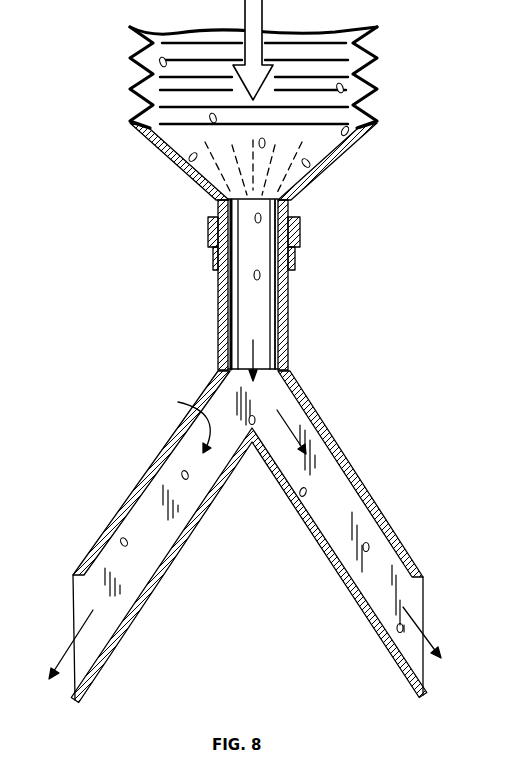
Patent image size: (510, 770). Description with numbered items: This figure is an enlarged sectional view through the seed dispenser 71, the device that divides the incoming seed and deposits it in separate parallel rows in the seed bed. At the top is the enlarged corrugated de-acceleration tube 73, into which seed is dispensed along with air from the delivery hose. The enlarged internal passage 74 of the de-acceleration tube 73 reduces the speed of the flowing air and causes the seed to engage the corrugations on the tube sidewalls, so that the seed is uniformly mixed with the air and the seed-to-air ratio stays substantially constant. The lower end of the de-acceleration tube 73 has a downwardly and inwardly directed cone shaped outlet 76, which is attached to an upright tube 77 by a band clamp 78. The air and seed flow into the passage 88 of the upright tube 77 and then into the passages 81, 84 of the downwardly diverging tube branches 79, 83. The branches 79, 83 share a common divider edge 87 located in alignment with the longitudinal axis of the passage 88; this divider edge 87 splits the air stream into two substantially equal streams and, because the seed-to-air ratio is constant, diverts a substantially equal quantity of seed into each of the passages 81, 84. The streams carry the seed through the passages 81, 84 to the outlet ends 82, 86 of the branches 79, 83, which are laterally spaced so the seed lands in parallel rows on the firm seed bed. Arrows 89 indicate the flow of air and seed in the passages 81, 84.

The seed dispenser 71 is at (155, 197).
The corrugated de-acceleration tube 73 is at (380, 66).
The internal passage 74 is at (298, 57).
The cone shaped outlet 76 is at (323, 170).
The upright tube 77 is at (288, 305).
The band clamp 78 is at (301, 232).
The tube branch 79 is at (148, 472).
The passage 81 is at (140, 530).
The outlet end 82 is at (84, 603).
The tube branch 83 is at (348, 456).
The passage 84 is at (354, 510).
The outlet end 86 is at (425, 598).
The divider edge 87 is at (255, 444).
The passage 88 is at (248, 282).
The arrows 89 is at (178, 402).